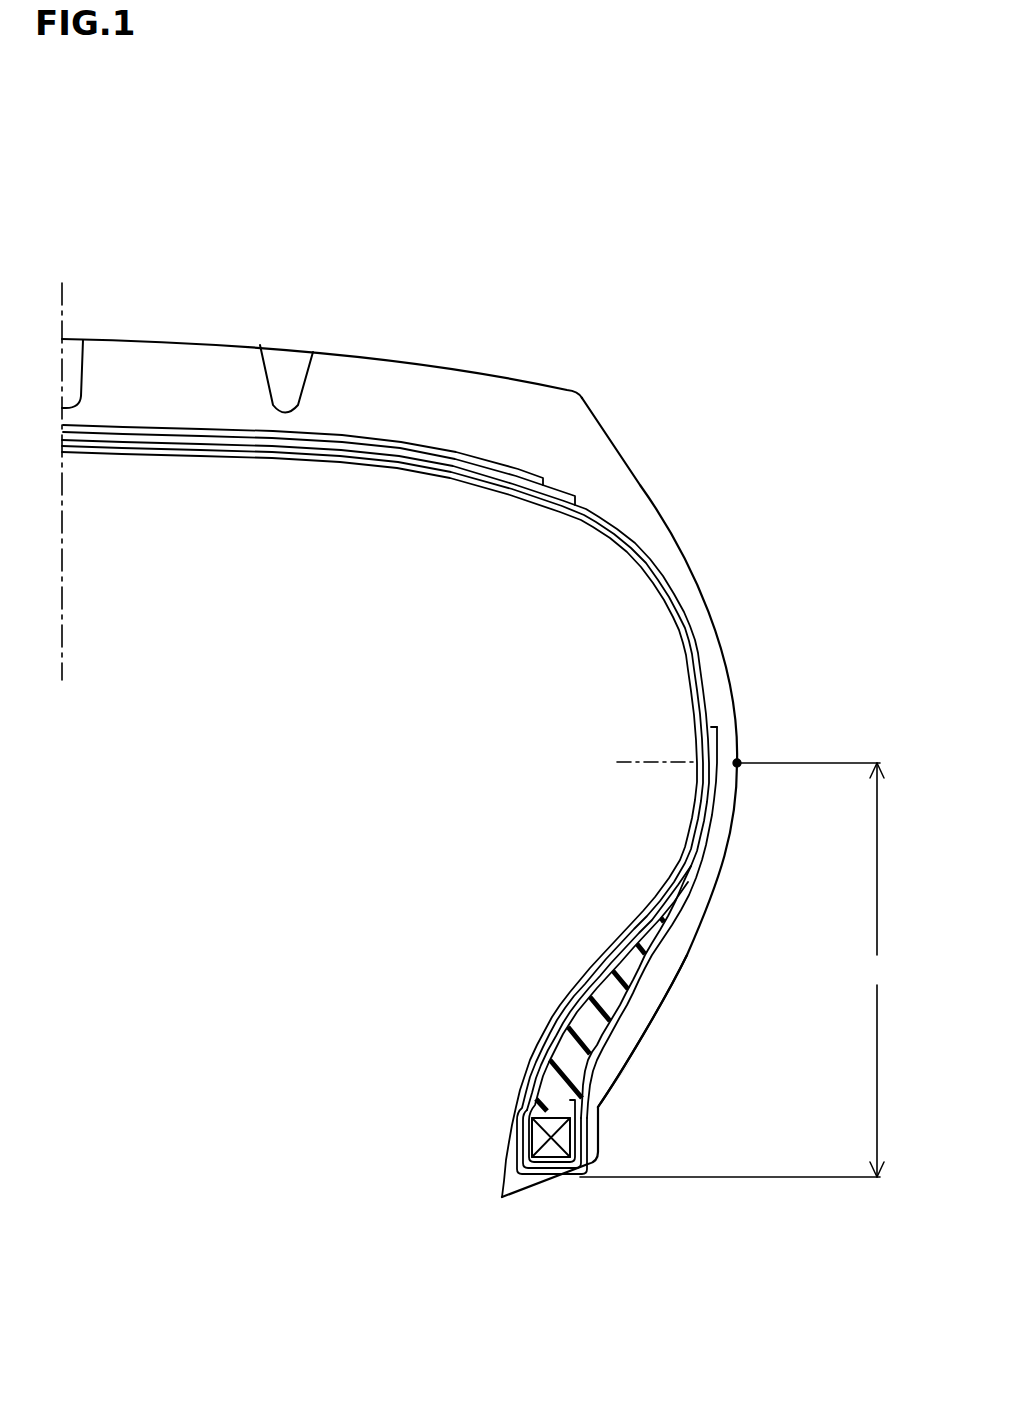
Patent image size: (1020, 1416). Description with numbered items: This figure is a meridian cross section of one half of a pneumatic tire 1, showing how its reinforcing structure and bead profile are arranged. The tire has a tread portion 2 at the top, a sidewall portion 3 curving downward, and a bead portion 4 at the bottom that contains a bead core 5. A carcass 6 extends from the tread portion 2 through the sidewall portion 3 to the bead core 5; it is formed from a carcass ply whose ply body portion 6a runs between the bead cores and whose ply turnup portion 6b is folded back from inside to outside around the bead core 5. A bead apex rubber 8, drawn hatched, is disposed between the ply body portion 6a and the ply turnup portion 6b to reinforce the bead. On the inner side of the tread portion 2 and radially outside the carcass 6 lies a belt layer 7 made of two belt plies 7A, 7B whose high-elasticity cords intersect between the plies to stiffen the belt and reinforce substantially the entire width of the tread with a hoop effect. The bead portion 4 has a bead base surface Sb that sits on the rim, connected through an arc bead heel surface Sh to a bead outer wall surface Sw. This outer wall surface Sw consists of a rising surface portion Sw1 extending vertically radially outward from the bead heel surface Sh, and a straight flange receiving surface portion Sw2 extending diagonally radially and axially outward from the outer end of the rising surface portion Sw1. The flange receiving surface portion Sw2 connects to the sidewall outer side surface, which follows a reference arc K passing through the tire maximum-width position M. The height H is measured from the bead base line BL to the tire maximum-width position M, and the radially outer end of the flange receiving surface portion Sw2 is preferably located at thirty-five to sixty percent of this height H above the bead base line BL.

The pneumatic tire 1 is at (697, 385).
The tread portion 2 is at (408, 347).
The sidewall portion 3 is at (747, 643).
The bead portion 4 is at (480, 1104).
The bead core 5 is at (537, 1137).
The carcass 6 is at (394, 818).
The ply body portion 6a is at (700, 663).
The ply turnup portion 6b is at (695, 800).
The belt layer 7 is at (319, 545).
The belt ply 7A is at (303, 443).
The belt ply 7B is at (223, 433).
The bead apex rubber 8 is at (572, 998).
The tire maximum-width position M is at (748, 753).
The reference arc K is at (685, 968).
The height of the tire maximum-width position H is at (813, 970).
The bead outer wall surface Sw is at (714, 1105).
The rising surface portion Sw1 is at (600, 1118).
The flange receiving surface portion Sw2 is at (622, 1072).
The bead heel surface Sh is at (595, 1160).
The bead base surface Sb is at (533, 1187).
The bead base line BL is at (807, 1177).